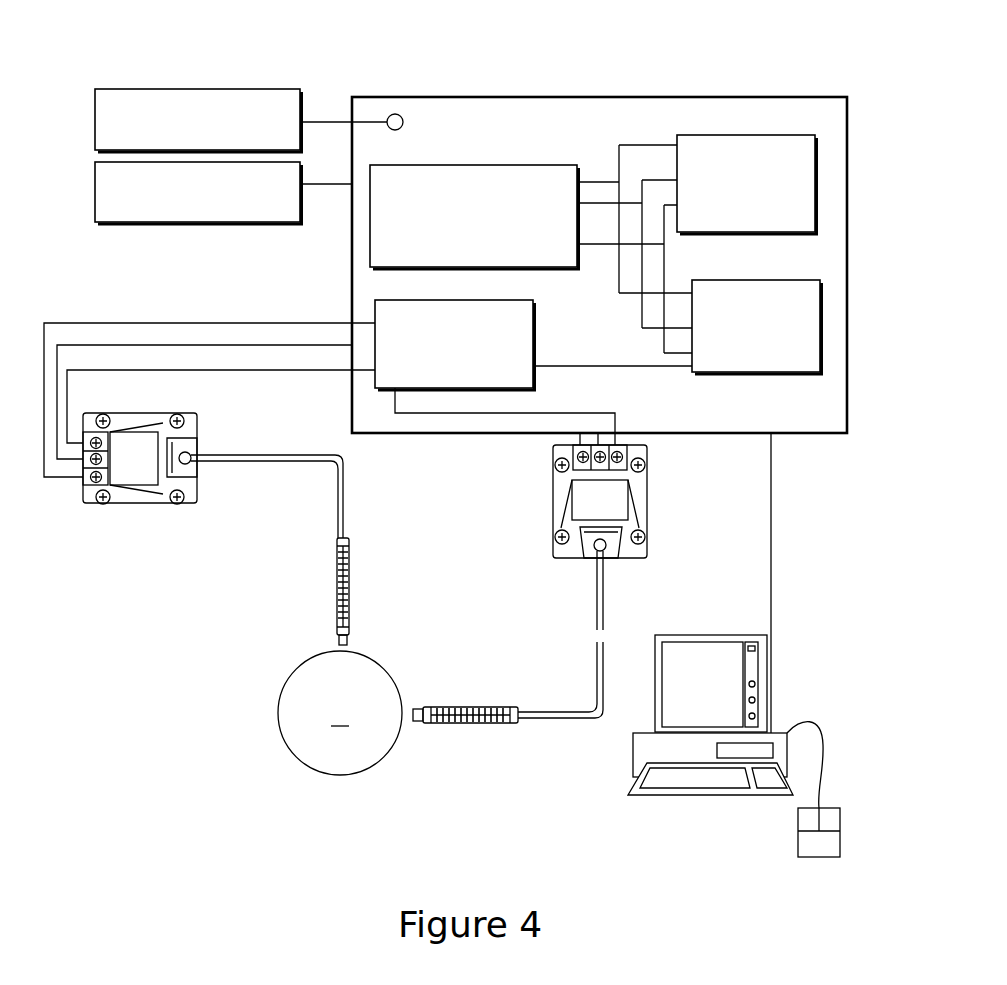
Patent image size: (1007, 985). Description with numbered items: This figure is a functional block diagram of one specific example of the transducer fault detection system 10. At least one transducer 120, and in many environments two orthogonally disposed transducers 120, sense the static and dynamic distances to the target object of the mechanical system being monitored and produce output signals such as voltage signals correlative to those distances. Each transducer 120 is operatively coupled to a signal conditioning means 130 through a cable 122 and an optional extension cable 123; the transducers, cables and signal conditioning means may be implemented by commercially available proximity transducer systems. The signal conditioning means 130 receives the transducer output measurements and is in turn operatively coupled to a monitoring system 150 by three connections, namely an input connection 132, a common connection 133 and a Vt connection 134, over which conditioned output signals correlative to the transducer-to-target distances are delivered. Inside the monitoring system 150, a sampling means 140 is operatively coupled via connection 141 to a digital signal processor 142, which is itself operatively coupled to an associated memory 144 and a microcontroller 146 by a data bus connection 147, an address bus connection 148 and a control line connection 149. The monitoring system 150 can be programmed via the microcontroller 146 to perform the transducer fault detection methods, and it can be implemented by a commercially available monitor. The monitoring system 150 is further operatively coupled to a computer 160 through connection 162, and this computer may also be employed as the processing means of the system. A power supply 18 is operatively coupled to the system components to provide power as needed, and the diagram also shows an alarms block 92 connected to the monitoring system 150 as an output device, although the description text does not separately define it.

The transducer fault detection system 10 is at (582, 70).
The power supply 18 is at (251, 134).
The alarms 92 is at (250, 210).
The transducer 120 is at (337, 565).
The cable 122 is at (342, 472).
The extension cable 123 is at (220, 455).
The signal conditioning means 130 is at (130, 502).
The connection (in) 132 is at (137, 318).
The connection (COM) 133 is at (213, 343).
The connection (Vt) 134 is at (285, 368).
The sampling means 140 is at (495, 373).
The connection 141 is at (592, 367).
The digital signal processor 142 is at (741, 356).
The memory 144 is at (731, 212).
The microcontroller 146 is at (458, 239).
The data bus connection 147 is at (618, 253).
The address bus connection 148 is at (642, 301).
The control line connection 149 is at (663, 338).
The monitoring system 150 is at (817, 414).
The computer 160 is at (637, 753).
The connection 162 is at (771, 480).